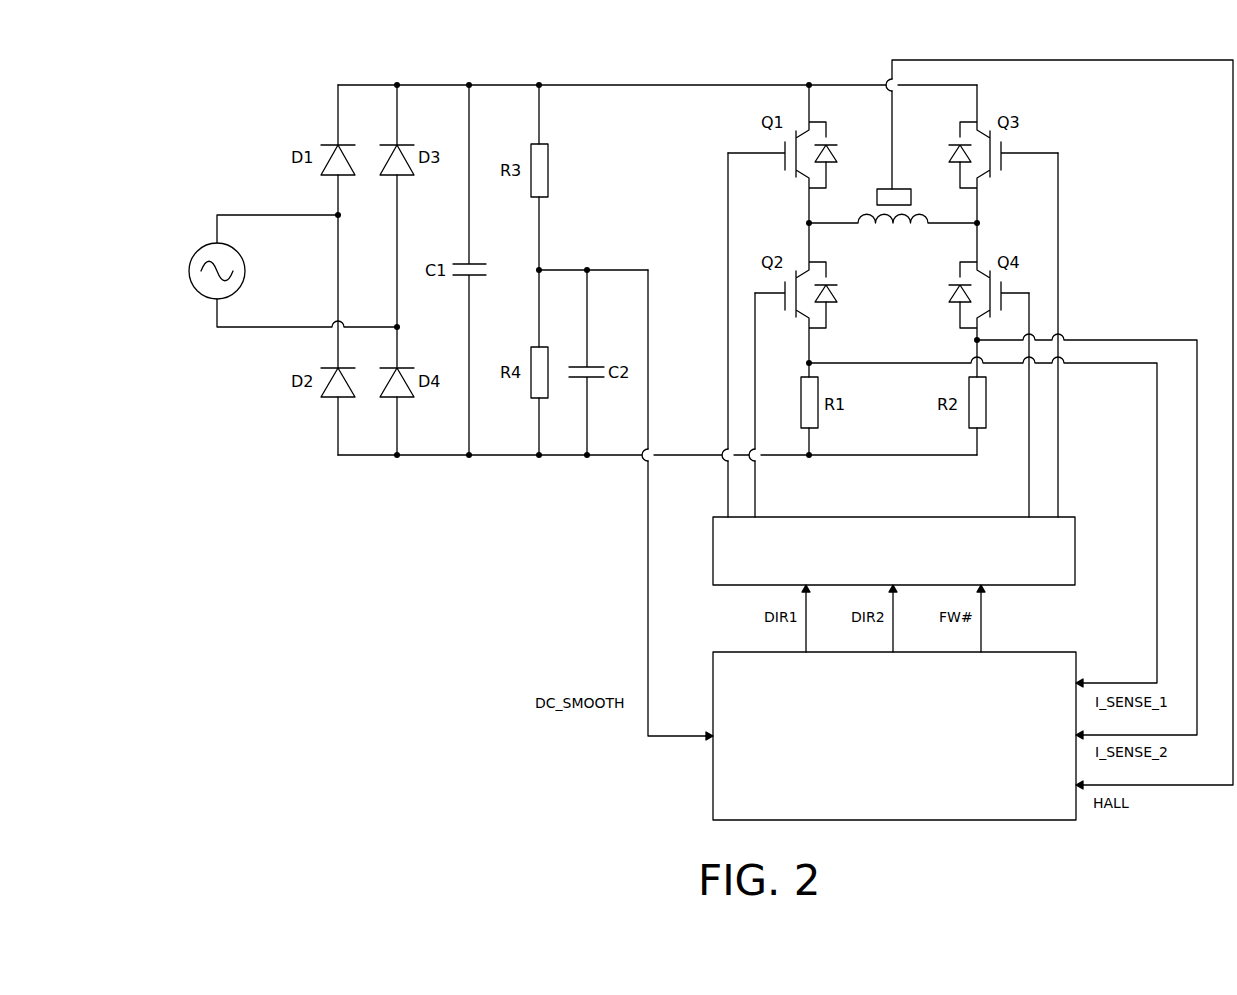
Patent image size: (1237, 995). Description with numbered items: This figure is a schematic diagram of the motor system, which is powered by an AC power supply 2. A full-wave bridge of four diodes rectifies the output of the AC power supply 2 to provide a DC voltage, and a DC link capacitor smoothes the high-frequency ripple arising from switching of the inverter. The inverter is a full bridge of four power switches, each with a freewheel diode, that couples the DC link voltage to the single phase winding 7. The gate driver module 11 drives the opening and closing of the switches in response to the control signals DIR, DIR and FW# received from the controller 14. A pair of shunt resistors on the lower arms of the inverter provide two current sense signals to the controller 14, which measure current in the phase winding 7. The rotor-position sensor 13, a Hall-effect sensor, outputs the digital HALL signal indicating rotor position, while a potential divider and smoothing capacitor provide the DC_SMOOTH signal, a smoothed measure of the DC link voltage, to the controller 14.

The AC power supply 2 is at (189, 270).
The phase winding 7 is at (893, 227).
The gate driver module 11 is at (1047, 588).
The rotor-position sensor 13 is at (901, 186).
The controller 14 is at (1058, 823).